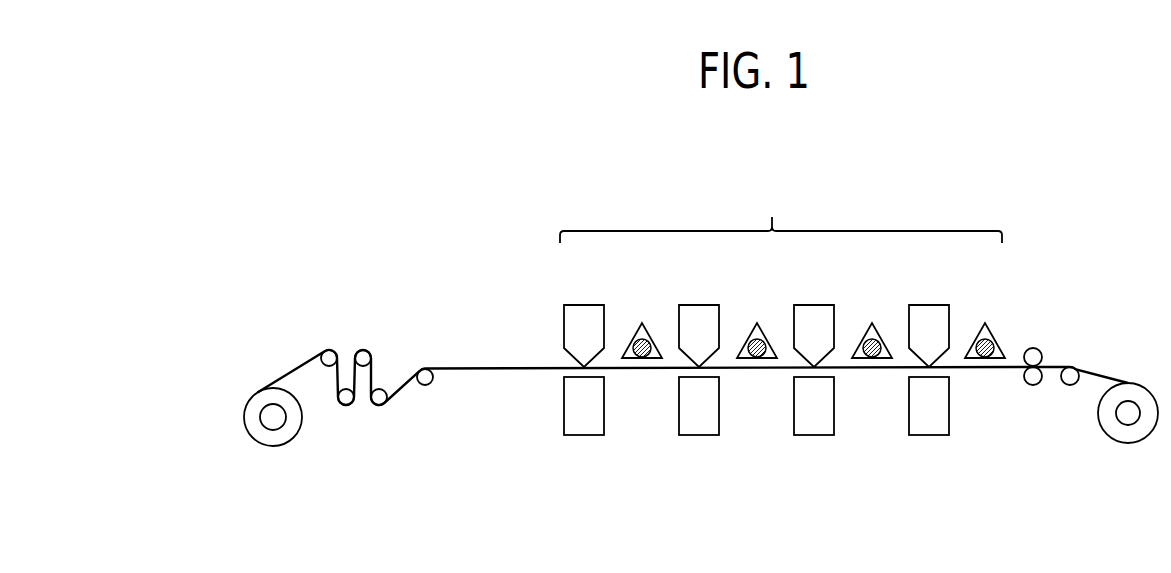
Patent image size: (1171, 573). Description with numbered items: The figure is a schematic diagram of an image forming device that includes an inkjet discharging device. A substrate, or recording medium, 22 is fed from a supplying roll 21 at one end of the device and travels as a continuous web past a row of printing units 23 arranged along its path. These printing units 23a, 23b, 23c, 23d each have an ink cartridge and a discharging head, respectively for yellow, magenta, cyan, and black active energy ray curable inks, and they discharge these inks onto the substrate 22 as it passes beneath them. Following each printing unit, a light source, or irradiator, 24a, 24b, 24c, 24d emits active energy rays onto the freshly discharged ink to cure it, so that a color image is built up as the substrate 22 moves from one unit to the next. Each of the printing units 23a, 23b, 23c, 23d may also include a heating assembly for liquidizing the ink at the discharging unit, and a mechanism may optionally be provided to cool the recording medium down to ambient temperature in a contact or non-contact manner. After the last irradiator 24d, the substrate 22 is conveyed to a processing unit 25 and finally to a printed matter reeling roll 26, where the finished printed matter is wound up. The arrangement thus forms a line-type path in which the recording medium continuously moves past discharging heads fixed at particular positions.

The supplying roll 21 is at (273, 430).
The substrate (recording medium) 22 is at (472, 364).
The printing units 23 is at (781, 213).
The printing unit 23a is at (584, 313).
The printing unit 23b is at (699, 313).
The printing unit 23c is at (814, 313).
The printing unit 23d is at (929, 313).
The light source (irradiator) 24a is at (646, 332).
The light source (irradiator) 24b is at (761, 332).
The light source (irradiator) 24c is at (876, 332).
The light source (irradiator) 24d is at (989, 332).
The processing unit 25 is at (1032, 328).
The printed matter reeling roll 26 is at (1126, 423).